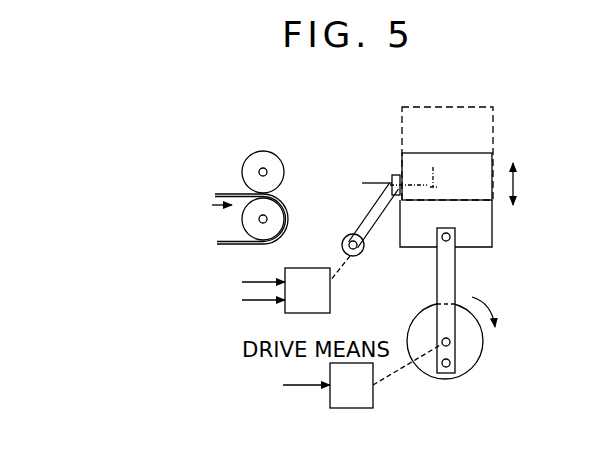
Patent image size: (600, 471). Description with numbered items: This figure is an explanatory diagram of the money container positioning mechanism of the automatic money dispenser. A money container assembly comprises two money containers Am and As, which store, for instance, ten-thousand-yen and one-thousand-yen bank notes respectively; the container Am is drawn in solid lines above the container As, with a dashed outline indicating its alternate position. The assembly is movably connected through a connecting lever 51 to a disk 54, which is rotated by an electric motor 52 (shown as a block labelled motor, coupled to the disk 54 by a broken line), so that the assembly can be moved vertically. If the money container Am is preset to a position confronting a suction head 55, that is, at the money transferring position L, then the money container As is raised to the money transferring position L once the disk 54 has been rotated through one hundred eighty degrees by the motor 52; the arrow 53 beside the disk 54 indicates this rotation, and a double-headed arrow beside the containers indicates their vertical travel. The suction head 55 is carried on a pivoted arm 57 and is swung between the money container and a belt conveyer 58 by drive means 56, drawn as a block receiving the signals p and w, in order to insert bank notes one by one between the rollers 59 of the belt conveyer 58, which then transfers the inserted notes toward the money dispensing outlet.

The connecting lever 51 is at (456, 263).
The electric motor 52 is at (342, 398).
The rotation direction of disc 53 is at (483, 297).
The disk 54 is at (480, 360).
The suction head 55 is at (397, 175).
The drive means 56 is at (295, 298).
The lever 57 is at (362, 172).
The belt conveyer 58 is at (208, 180).
The rollers 59 is at (268, 163).
The money container Am is at (482, 167).
The money container As is at (483, 222).
The money transferring position L is at (421, 171).